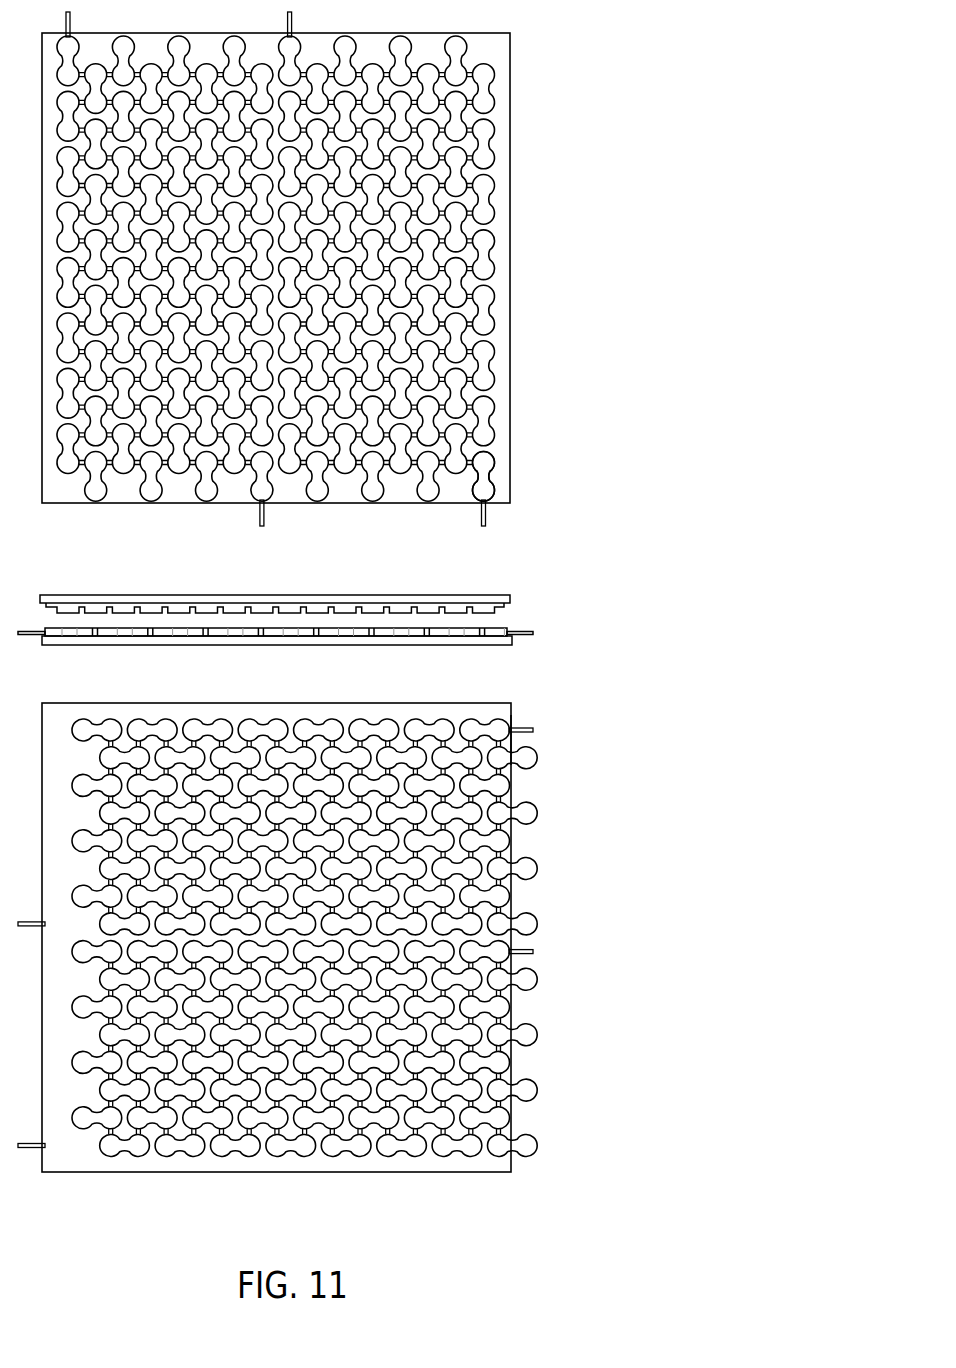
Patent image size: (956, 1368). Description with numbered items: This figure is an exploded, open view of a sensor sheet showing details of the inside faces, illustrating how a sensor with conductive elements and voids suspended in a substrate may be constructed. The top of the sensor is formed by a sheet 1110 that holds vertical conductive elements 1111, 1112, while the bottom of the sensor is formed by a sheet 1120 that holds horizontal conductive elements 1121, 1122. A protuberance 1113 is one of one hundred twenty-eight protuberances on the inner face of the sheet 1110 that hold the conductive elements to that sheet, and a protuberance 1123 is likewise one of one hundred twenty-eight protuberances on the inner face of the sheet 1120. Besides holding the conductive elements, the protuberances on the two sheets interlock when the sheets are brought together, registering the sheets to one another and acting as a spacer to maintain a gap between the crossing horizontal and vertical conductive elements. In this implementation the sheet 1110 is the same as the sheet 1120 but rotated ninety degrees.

The sheet 1110 is at (512, 506).
The vertical conductive element 1111 is at (481, 531).
The vertical conductive element 1112 is at (259, 527).
The protuberance 1113 is at (495, 455).
The sheet 1120 is at (513, 1175).
The horizontal conductive element 1121 is at (537, 736).
The horizontal conductive element 1122 is at (537, 957).
The protuberance 1123 is at (509, 741).